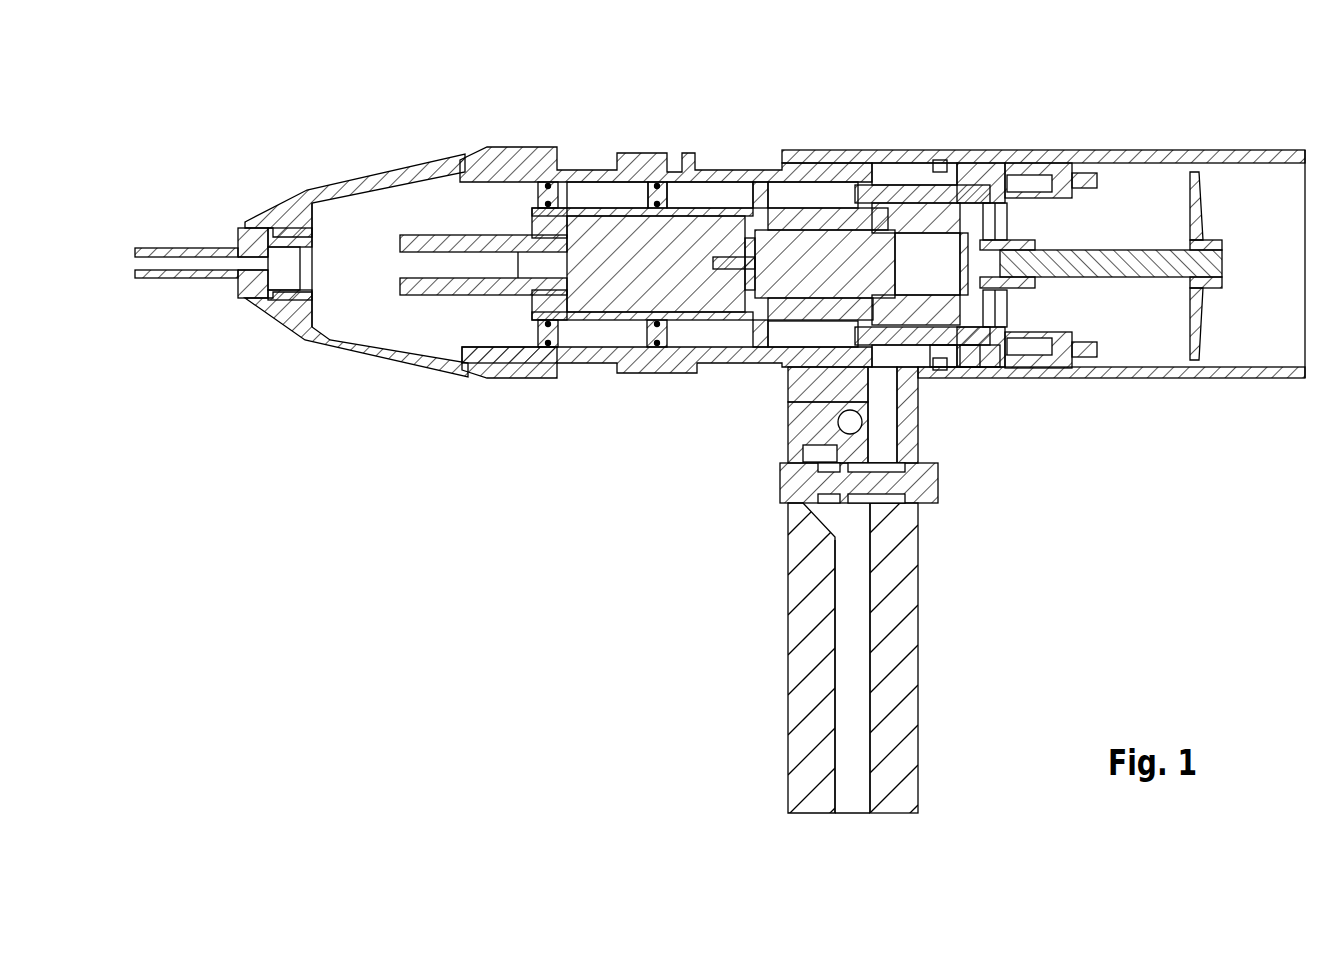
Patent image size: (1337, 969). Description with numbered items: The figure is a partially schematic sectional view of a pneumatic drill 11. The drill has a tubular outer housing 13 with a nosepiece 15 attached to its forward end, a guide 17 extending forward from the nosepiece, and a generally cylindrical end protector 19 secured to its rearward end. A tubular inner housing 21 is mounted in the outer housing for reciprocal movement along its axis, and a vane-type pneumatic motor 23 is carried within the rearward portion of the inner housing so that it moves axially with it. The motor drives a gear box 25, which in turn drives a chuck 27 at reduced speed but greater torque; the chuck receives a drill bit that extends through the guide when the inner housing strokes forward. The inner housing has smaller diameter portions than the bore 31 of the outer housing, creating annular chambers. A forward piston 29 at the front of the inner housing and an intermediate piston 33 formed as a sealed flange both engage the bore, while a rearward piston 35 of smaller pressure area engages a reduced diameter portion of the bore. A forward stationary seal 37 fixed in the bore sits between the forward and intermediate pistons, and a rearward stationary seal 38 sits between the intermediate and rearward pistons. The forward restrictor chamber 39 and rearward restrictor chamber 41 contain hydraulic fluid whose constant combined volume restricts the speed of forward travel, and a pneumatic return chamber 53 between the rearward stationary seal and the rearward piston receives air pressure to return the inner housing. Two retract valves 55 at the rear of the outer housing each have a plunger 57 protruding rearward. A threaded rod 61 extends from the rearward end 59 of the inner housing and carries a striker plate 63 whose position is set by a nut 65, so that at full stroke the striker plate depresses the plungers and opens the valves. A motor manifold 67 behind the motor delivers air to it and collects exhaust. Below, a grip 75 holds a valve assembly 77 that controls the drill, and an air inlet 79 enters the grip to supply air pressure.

The drill 11 is at (846, 84).
The outer housing 13 is at (700, 160).
The nosepiece 15 is at (392, 172).
The guide 17 is at (198, 247).
The end protector 19 is at (1222, 150).
The inner housing 21 is at (533, 224).
The pneumatic motor 23 is at (787, 260).
The gear box 25 is at (630, 200).
The chuck 27 is at (432, 235).
The forward piston 29 is at (577, 340).
The bore 31 is at (518, 345).
The intermediate piston 33 is at (757, 335).
The rearward piston 35 is at (980, 340).
The forward stationary seal 37 is at (665, 335).
The rearward stationary seal 38 is at (900, 205).
The forward restrictor chamber 39 is at (600, 190).
The rearward restrictor chamber 41 is at (715, 195).
The return chamber 53 is at (970, 340).
The retract valve 55 is at (983, 183).
The plunger 57 is at (1098, 180).
The rearward end 59 is at (975, 228).
The threaded rod 61 is at (1118, 250).
The striker plate 63 is at (1203, 208).
The nut 65 is at (1217, 293).
The motor manifold 67 is at (948, 293).
The grip 75 is at (918, 625).
The valve assembly 77 is at (780, 485).
The air inlet 79 is at (858, 760).